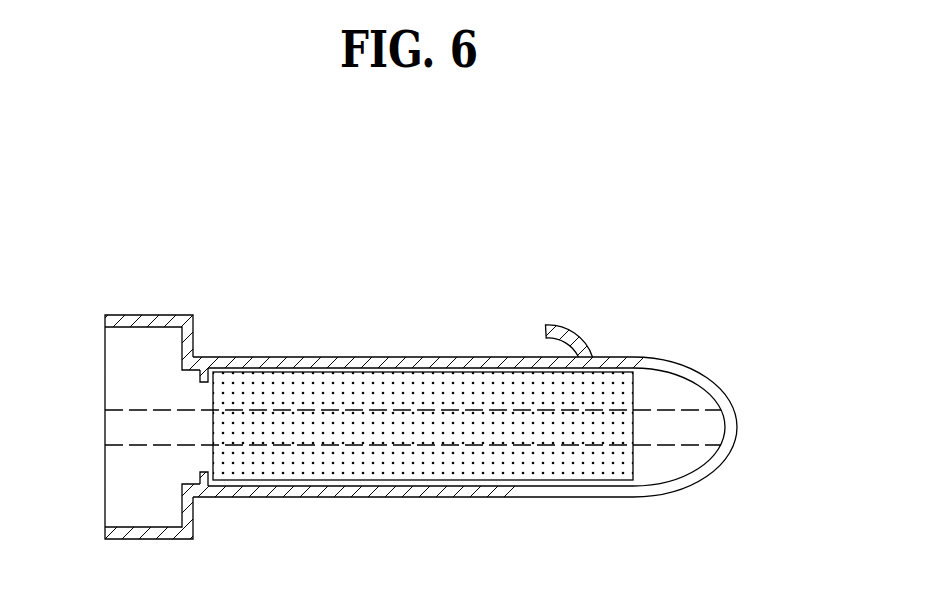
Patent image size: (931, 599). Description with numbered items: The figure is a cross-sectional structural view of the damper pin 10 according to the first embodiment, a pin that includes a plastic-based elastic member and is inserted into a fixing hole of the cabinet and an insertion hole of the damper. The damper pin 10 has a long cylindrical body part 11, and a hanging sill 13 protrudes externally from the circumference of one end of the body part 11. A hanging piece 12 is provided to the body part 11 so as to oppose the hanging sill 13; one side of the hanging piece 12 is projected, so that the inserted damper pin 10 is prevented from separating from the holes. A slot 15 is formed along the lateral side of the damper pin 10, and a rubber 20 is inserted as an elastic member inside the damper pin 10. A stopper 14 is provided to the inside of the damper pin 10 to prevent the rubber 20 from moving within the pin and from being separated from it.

The damper pin 10 is at (465, 299).
The body part 11 is at (336, 358).
The hanging piece 12 is at (576, 333).
The hanging sill 13 is at (152, 318).
The stopper 14 is at (206, 381).
The slot 15 is at (675, 443).
The rubber 20 is at (412, 462).